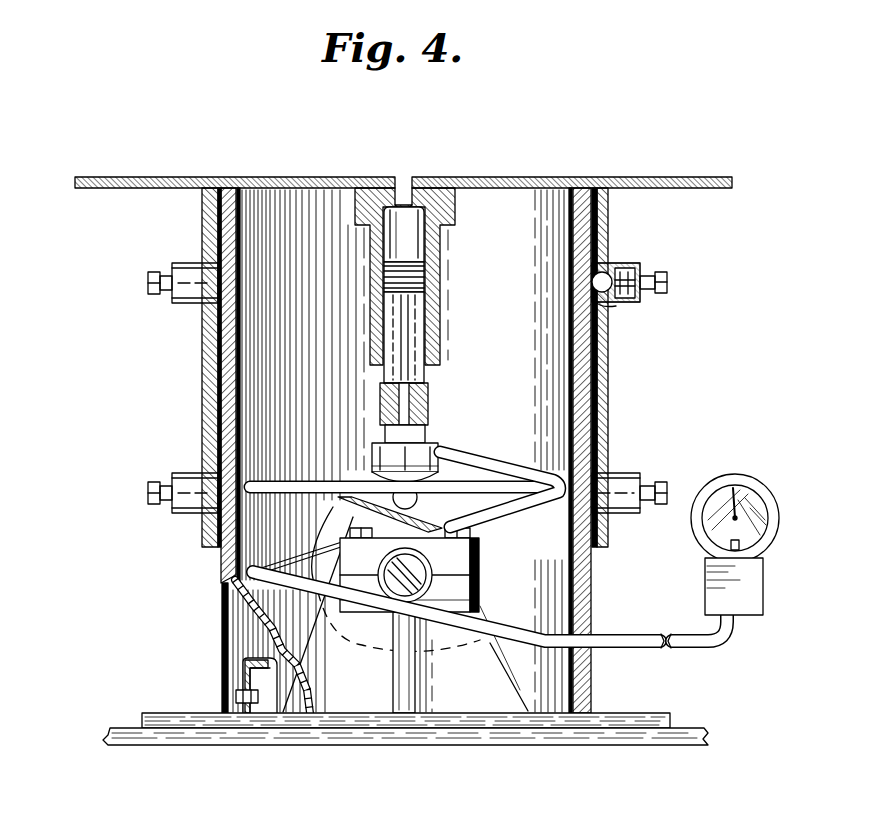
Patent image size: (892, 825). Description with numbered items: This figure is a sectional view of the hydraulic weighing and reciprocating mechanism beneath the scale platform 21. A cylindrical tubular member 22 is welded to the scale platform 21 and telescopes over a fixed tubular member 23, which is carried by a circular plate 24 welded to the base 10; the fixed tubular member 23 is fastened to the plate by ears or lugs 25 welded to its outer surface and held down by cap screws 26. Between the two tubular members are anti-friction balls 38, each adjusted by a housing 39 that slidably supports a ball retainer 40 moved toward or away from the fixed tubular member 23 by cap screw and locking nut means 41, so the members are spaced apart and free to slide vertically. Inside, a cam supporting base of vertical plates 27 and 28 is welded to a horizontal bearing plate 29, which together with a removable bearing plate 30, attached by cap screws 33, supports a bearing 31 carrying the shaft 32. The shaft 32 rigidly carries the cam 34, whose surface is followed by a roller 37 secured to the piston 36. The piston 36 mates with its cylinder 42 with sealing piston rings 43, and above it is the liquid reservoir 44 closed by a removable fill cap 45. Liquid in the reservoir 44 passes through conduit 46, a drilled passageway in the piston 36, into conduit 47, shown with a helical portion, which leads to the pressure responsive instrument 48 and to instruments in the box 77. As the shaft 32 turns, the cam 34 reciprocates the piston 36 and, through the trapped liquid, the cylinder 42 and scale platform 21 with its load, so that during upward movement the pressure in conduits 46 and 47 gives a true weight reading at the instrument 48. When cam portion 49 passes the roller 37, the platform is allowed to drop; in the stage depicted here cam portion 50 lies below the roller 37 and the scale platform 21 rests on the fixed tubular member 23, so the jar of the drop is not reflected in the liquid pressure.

The base 10 is at (120, 740).
The scale platform 21 is at (508, 180).
The cylindrical tubular member 22 is at (606, 233).
The fixed tubular member 23 is at (232, 373).
The circular plate 24 is at (625, 735).
The ears or lugs 25 is at (243, 675).
The cap screws 26 is at (236, 697).
The vertical plate 27 is at (498, 666).
The vertical plate 28 is at (416, 686).
The horizontal bearing plate 29 is at (478, 606).
The removable bearing plate 30 is at (472, 554).
The bearing 31 is at (425, 562).
The shaft 32 is at (428, 583).
The cap screws 33 is at (352, 540).
The cam 34 is at (325, 538).
The piston 36 is at (426, 380).
The roller 37 is at (375, 512).
The balls 38 is at (222, 285).
The housing 39 is at (648, 306).
The ball retainer 40 is at (614, 305).
The cap screw and locking nut means 41 is at (660, 265).
The cylinder 42 is at (437, 286).
The piston rings 43 is at (384, 268).
The liquid reservoir 44 is at (416, 233).
The removable fill cap 45 is at (407, 182).
The conduit 46 is at (410, 408).
The conduit 47 is at (465, 458).
The pressure responsive instrument 48 is at (708, 528).
The cam portion 49 is at (345, 507).
The cam portion 50 is at (418, 505).
The box 77 is at (705, 582).